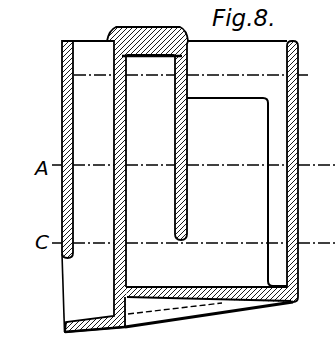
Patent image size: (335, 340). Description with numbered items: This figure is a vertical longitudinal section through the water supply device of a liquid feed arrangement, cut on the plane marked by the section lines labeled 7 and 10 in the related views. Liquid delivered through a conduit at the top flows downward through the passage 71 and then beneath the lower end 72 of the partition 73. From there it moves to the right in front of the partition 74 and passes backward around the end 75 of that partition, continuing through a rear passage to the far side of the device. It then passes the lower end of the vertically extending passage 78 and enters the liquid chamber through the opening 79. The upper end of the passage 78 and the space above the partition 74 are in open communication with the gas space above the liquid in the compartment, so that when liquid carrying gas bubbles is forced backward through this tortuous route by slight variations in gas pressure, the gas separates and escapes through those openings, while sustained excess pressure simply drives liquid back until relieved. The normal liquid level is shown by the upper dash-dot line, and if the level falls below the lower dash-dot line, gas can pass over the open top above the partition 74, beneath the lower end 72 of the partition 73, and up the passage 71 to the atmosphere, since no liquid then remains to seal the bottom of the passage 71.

The section line 7- 7 is at (33, 64).
The section line 10- 10 is at (149, 7).
The passage 71 is at (126, 179).
The lower end of partition 72 is at (196, 228).
The partition 73 is at (188, 158).
The partition 74 is at (253, 192).
The end of partition 75 is at (268, 218).
The vertically extending passage 78 is at (84, 149).
The opening 79 is at (74, 286).